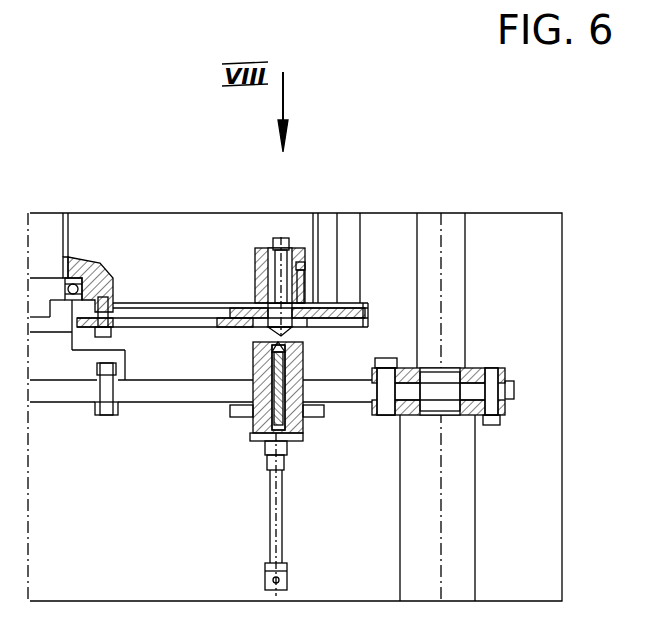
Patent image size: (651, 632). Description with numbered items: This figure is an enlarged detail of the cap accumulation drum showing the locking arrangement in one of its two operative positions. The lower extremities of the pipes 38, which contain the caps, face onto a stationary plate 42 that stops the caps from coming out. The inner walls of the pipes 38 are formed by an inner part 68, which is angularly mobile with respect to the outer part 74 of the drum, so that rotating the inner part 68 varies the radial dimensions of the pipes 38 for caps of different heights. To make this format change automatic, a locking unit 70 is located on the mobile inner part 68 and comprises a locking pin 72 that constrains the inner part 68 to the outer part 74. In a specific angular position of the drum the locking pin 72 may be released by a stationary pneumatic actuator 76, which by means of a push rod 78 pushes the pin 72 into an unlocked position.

The pipes 38 is at (357, 232).
The stationary plate 42 is at (323, 325).
The inner part 68 is at (318, 300).
The locking unit 70 is at (245, 280).
The locking pin 72 is at (275, 240).
The outer part 74 is at (338, 310).
The stationary pneumatic actuator 76 is at (272, 523).
The push rod 78 is at (253, 430).